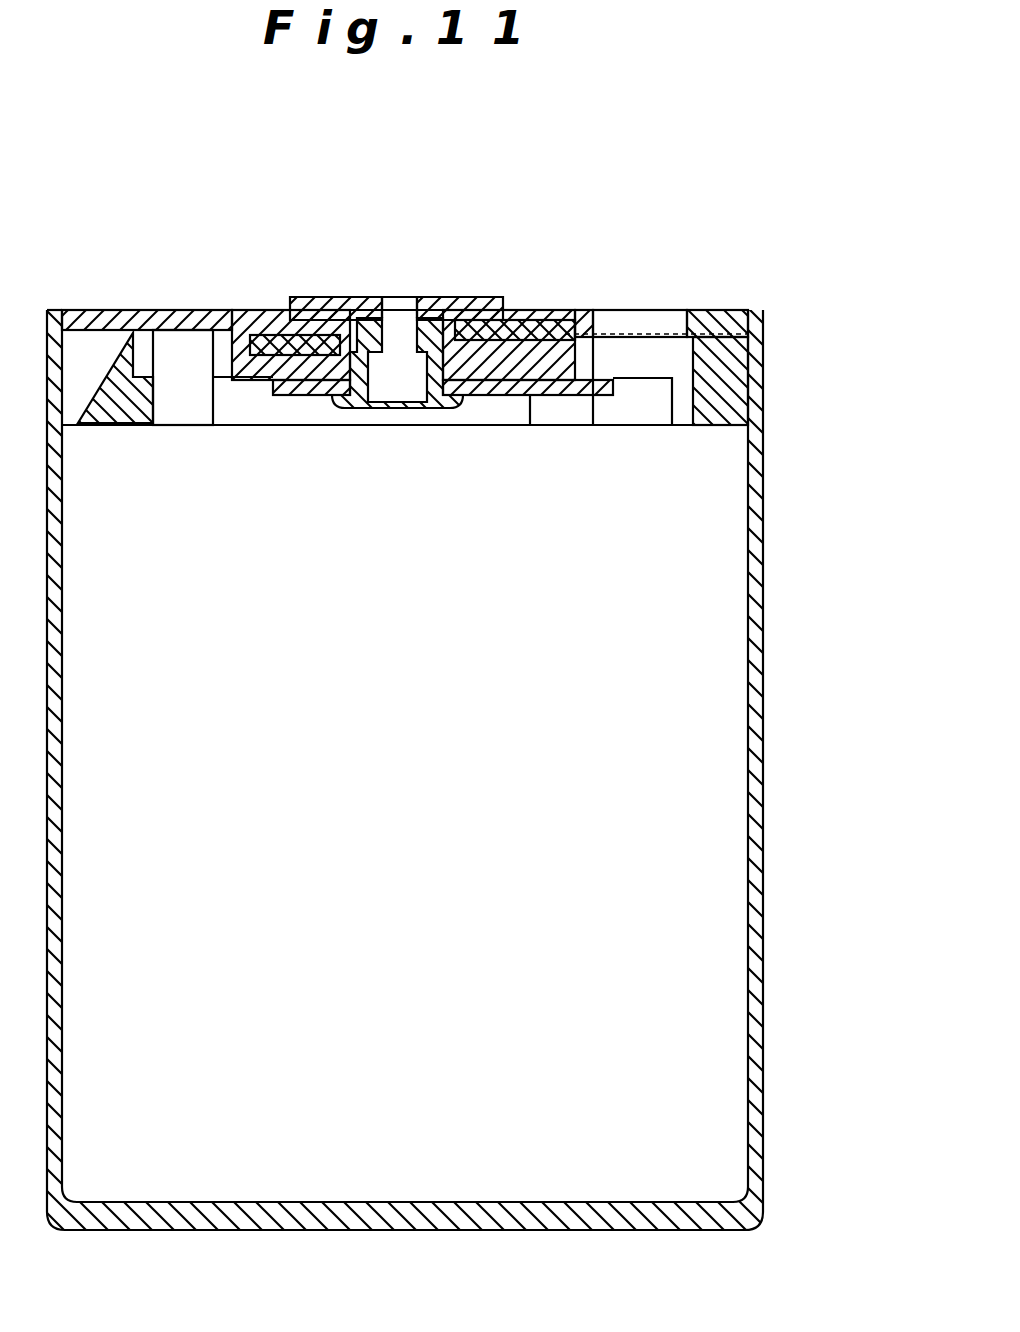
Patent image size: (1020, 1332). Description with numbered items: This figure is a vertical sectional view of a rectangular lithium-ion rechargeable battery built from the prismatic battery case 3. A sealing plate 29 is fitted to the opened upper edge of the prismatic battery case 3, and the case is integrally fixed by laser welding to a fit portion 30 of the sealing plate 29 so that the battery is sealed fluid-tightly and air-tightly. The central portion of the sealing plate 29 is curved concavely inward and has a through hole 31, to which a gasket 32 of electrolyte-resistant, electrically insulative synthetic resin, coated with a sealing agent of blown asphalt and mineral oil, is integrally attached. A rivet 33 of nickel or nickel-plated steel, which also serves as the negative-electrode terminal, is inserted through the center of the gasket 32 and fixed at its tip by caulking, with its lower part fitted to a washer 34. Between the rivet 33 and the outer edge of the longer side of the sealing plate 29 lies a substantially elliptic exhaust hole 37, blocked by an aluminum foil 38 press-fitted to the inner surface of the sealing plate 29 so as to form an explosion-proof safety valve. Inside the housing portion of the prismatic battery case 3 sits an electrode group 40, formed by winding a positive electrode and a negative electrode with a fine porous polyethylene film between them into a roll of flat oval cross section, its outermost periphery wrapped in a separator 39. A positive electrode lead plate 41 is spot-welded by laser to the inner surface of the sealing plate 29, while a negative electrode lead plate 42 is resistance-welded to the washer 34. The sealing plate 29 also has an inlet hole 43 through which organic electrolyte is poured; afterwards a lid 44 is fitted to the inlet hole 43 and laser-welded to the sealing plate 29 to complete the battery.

The prismatic battery case 3 is at (766, 566).
The sealing plate 29 is at (583, 311).
The fit portion 30 is at (742, 310).
The through hole 31 is at (368, 365).
The gasket 32 is at (318, 298).
The rivet 33 is at (443, 297).
The washer 34 is at (495, 395).
The exhaust hole 37 is at (648, 310).
The aluminum foil 38 is at (631, 340).
The separator 39 is at (660, 430).
The electrode group 40 is at (676, 847).
The positive electrode lead plate 41 is at (182, 375).
The negative electrode lead plate 42 is at (555, 405).
The inlet hole 43 is at (110, 310).
The lid 44 is at (118, 310).